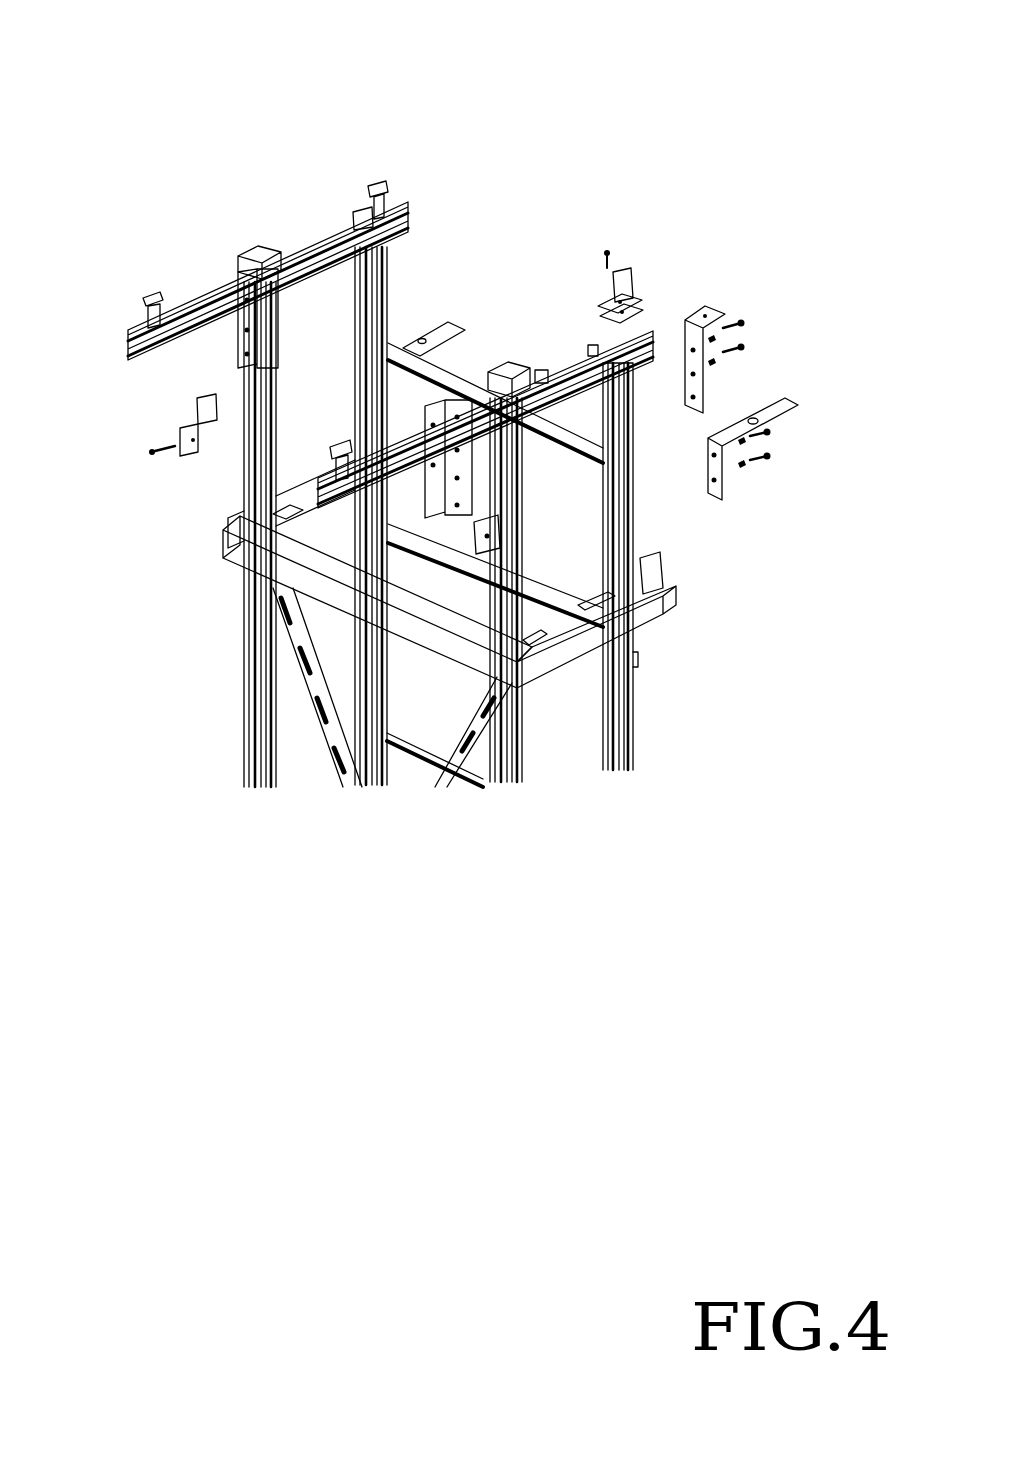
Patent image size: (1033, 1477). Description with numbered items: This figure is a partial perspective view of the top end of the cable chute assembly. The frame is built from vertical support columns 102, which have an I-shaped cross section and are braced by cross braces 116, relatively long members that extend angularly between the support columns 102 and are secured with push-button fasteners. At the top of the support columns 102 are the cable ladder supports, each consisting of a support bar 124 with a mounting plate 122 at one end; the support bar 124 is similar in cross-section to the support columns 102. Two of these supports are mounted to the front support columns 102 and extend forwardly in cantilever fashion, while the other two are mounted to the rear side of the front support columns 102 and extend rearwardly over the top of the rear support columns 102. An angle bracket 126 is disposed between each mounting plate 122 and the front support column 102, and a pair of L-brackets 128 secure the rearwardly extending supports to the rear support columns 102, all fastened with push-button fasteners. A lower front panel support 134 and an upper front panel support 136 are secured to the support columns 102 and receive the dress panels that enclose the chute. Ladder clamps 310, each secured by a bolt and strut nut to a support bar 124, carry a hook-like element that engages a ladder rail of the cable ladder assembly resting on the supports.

The support column 102 is at (238, 749).
The cross brace 116 is at (303, 682).
The mounting plate 122 is at (238, 258).
The support bar 124 is at (191, 298).
The angle bracket 126 is at (268, 325).
The L-bracket 128 is at (454, 320).
The lower front panel support 134 is at (580, 643).
The upper front panel support 136 is at (253, 562).
The ladder clamp 310 is at (164, 328).